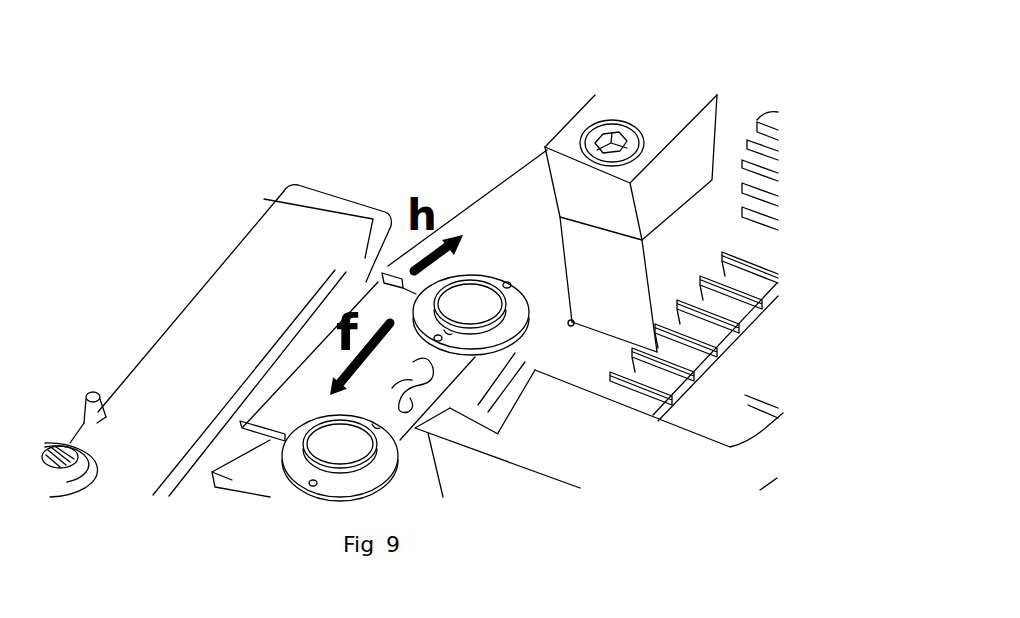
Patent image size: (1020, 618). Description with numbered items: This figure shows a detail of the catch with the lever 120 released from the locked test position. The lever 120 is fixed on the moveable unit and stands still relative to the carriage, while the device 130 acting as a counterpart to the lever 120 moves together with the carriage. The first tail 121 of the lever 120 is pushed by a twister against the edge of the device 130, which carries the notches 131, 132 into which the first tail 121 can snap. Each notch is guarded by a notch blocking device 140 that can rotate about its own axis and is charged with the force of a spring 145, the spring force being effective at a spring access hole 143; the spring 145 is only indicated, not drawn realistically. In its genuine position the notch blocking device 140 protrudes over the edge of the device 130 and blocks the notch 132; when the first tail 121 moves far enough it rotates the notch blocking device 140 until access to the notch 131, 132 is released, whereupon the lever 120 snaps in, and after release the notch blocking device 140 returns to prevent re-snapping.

The lever 120 is at (268, 253).
The first tail of the lever 121 is at (337, 193).
The device as a counterpart to the lever 130 is at (540, 153).
The notch 131 is at (277, 432).
The notch 132 is at (399, 285).
The notch blocking device 140 is at (382, 462).
The spring access hole 143 is at (447, 332).
The spring 145 is at (412, 378).